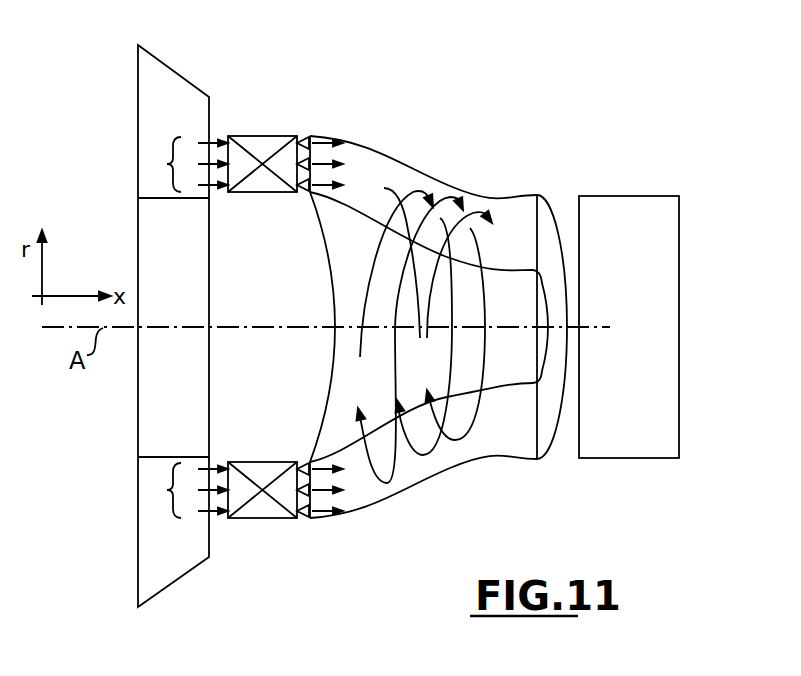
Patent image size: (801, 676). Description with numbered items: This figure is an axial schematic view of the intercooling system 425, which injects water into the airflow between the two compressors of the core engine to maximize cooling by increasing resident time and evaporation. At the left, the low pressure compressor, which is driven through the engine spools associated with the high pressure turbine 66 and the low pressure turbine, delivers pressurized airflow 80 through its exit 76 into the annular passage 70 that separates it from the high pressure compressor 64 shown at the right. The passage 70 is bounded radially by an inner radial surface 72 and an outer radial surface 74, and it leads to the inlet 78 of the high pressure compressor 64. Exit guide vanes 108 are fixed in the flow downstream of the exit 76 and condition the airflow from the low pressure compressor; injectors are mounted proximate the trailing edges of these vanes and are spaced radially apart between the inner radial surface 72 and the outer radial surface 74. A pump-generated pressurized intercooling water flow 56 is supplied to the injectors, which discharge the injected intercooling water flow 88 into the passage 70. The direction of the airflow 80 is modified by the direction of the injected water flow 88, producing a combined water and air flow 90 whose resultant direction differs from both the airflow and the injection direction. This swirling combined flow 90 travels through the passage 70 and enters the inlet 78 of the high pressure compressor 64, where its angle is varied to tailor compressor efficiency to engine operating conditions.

The high pressure turbine 66 is at (148, 80).
The pressurized airflow 80 is at (167, 164).
The exit 76 is at (226, 125).
The exit guide vanes 108 is at (266, 185).
The pressurized intercooling water flow 56 is at (292, 128).
The injected intercooling water flow 88 is at (322, 138).
The annular passage 70 is at (427, 166).
The outer radial surface 74 is at (497, 201).
The inlet 78 is at (547, 446).
The inner radial surface 72 is at (462, 250).
The combined water and air flow 90 is at (457, 200).
The high pressure compressor 64 is at (627, 212).
The intercooling system 425 is at (672, 108).